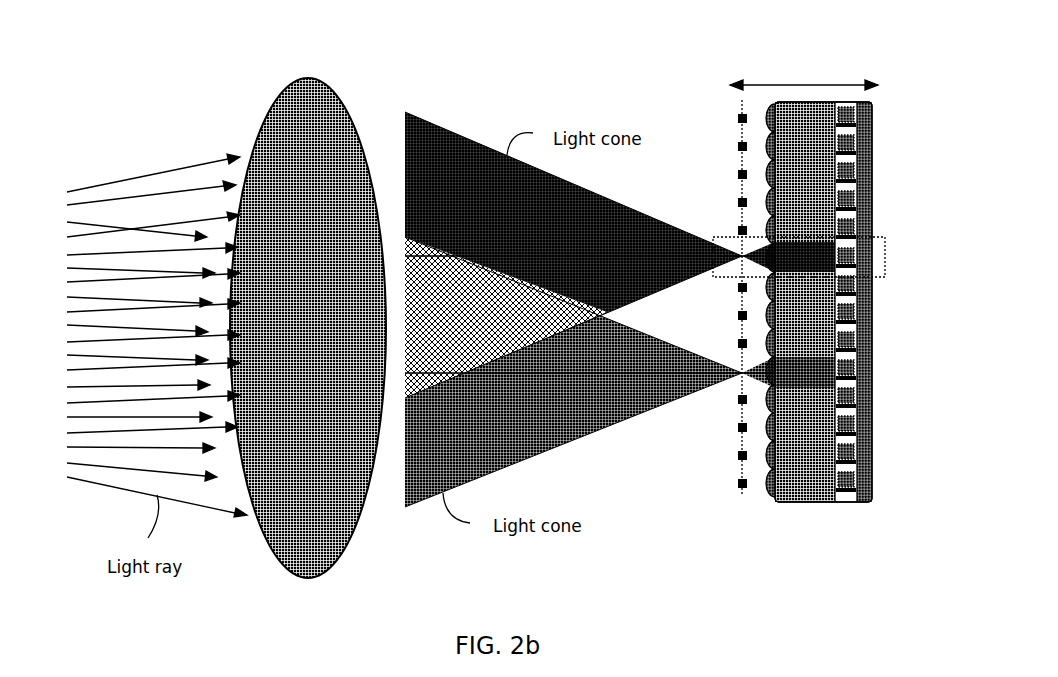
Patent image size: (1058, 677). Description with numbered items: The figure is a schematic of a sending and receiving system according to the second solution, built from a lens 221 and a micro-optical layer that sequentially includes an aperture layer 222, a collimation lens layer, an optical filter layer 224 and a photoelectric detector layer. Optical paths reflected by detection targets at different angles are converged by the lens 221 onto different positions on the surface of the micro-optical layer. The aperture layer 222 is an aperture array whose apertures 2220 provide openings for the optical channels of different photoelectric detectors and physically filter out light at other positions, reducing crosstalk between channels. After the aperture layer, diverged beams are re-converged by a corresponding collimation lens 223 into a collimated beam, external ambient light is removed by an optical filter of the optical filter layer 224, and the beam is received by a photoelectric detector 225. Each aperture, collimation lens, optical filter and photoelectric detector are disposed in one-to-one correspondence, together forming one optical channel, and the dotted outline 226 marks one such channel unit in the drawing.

The lens 221 is at (267, 123).
The aperture layer 222 is at (735, 132).
The aperture 2220 is at (742, 428).
The collimation lens 223 is at (772, 497).
The optical filter layer 224 is at (805, 502).
The photoelectric detector 225 is at (858, 485).
The pixel unit 226 is at (880, 252).